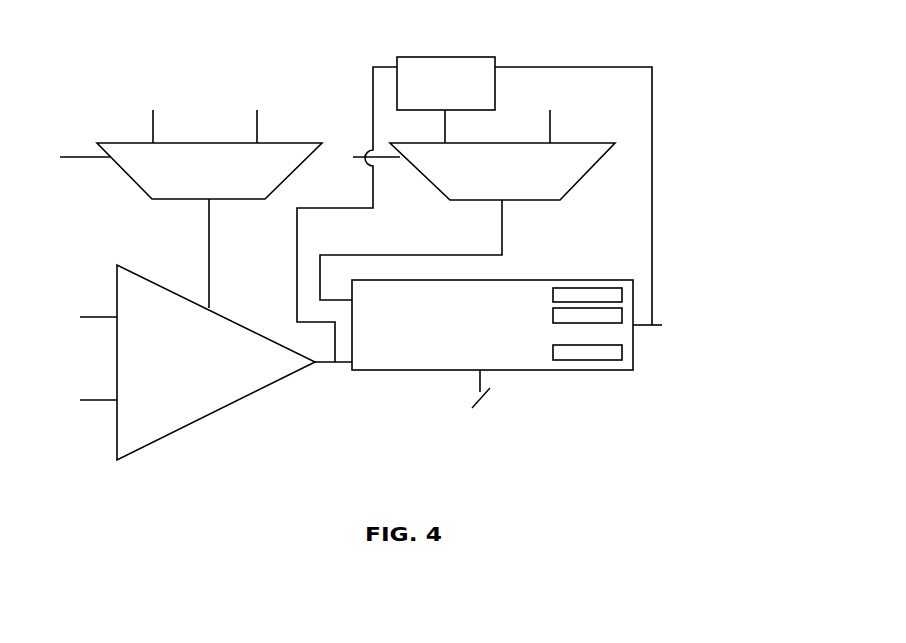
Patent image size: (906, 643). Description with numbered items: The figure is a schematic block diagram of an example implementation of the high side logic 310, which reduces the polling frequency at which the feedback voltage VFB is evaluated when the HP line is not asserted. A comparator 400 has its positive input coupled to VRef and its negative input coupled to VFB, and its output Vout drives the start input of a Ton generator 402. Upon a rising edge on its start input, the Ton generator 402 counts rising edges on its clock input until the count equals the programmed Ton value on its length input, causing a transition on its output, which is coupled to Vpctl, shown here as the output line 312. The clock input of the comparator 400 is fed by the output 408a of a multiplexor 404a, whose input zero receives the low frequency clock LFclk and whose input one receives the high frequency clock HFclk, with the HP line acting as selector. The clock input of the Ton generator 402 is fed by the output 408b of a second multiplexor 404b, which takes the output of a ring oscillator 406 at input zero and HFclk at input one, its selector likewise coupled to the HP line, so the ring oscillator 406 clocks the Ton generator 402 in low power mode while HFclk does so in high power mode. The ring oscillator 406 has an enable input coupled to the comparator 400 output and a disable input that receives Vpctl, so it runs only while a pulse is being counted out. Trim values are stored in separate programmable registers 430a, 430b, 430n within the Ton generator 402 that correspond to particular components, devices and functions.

The high side logic 310 is at (700, 68).
The Vpctl pulse control signal 312 is at (662, 325).
The comparator 400 is at (248, 328).
The Ton generator 402 is at (527, 372).
The multiplexor 404a is at (133, 190).
The multiplexor 404b is at (591, 191).
The ring oscillator 406 is at (445, 57).
The output of multiplexor 404a 408a is at (208, 254).
The output of multiplexor 404b 408b is at (410, 255).
The programmable register 430a is at (622, 295).
The programmable register 430b is at (622, 315).
The programmable register 430n is at (588, 362).